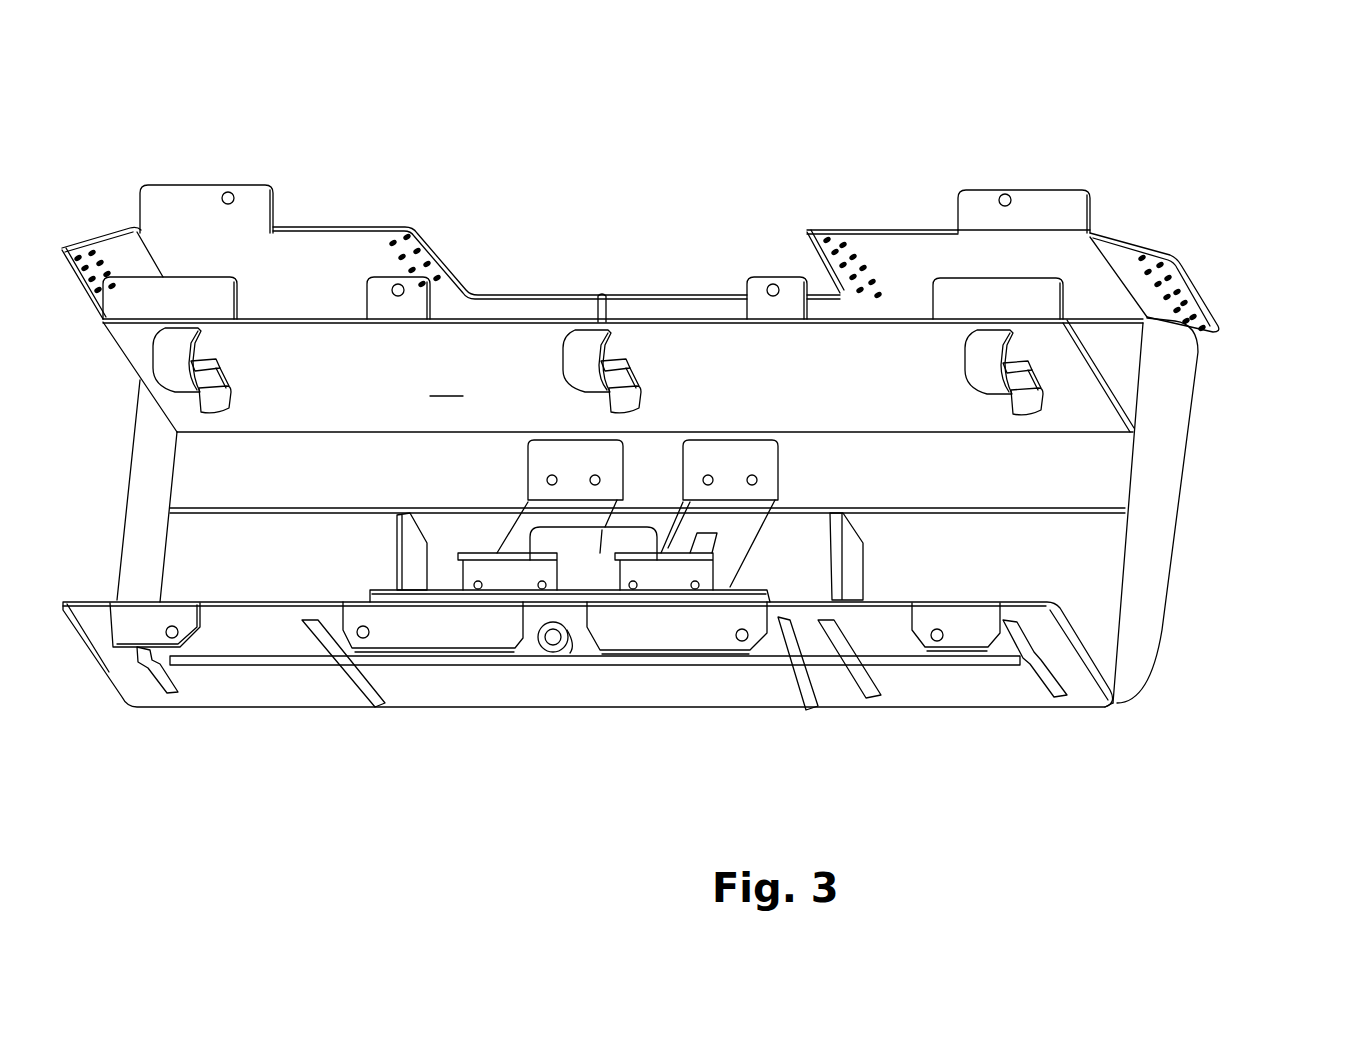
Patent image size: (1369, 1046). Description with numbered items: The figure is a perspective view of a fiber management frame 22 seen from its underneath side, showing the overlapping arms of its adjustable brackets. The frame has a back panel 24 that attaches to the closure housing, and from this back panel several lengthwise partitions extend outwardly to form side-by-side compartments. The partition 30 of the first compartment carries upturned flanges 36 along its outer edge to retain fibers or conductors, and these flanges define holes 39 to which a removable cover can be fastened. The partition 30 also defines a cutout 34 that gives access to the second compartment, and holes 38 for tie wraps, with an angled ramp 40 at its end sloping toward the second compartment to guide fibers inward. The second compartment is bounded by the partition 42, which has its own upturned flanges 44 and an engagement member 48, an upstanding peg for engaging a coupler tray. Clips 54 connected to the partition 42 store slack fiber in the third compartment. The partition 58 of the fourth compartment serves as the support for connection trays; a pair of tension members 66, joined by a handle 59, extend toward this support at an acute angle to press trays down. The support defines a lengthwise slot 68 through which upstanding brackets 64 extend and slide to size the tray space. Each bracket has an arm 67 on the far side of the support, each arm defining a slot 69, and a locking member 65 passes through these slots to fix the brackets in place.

The fiber management frame 22 is at (1253, 327).
The back panel 24 is at (1100, 577).
The partition 30 is at (318, 252).
The cutout 34 is at (637, 270).
The upturned flanges 36 is at (1052, 198).
The holes 38 is at (413, 250).
The holes 39 is at (1002, 196).
The angled ramp 40 is at (1180, 262).
The partition 42 is at (446, 382).
The upturned flanges 44 is at (1040, 293).
The engagement member 48 is at (603, 307).
The clips 54 is at (153, 353).
The partition 58 is at (1085, 680).
The handle 59 is at (620, 535).
The upstanding bracket 64 is at (400, 557).
The locking member 65 is at (565, 647).
The tension members 66 is at (738, 533).
The arm 67 is at (677, 660).
The slot 68 is at (250, 658).
The slot 69 is at (532, 643).